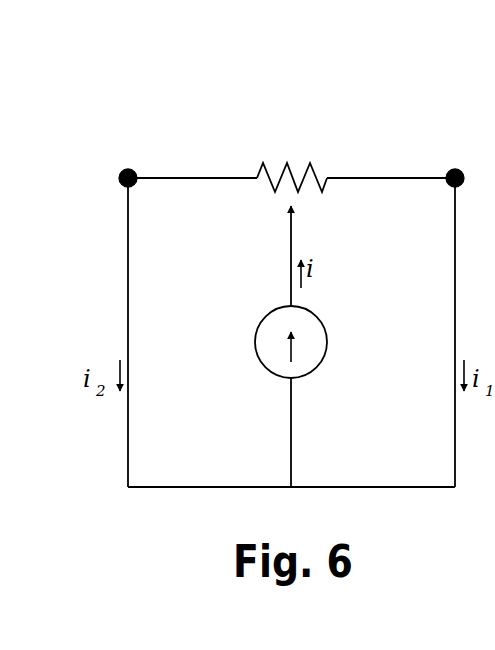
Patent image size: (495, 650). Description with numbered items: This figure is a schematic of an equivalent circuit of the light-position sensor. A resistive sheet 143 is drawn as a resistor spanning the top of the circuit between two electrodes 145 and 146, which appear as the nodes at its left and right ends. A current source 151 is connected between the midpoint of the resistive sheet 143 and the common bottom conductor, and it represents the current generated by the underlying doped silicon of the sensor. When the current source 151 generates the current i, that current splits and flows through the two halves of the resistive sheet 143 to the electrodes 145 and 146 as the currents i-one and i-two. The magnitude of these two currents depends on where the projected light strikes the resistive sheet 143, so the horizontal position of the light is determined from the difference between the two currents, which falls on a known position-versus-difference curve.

The resistive sheet 143 is at (302, 153).
The electrode 145 is at (133, 165).
The electrode 146 is at (461, 163).
The current source 151 is at (336, 342).